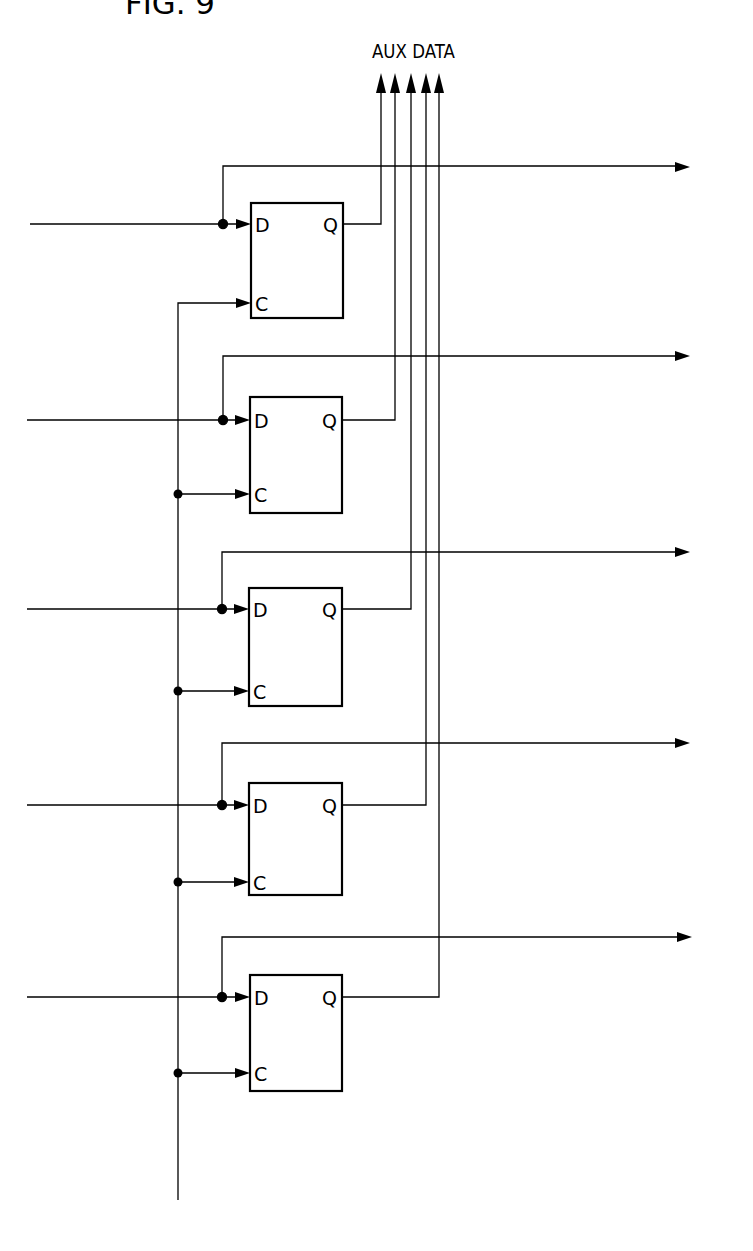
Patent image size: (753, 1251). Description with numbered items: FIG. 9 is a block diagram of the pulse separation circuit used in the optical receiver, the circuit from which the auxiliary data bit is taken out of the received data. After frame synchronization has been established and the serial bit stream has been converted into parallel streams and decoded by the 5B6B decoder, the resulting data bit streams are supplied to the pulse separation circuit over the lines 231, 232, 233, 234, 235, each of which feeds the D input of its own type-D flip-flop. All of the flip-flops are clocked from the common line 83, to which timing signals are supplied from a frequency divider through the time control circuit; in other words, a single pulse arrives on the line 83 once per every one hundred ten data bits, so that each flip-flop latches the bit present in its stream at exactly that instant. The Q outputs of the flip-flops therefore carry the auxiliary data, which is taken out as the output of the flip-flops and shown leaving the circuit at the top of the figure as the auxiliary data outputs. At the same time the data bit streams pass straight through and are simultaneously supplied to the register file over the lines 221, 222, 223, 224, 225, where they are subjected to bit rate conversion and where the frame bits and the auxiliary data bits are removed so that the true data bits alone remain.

The line 83 is at (180, 1142).
The line 221 is at (586, 155).
The line 222 is at (577, 343).
The line 223 is at (573, 549).
The line 224 is at (568, 744).
The line 225 is at (555, 940).
The line 231 is at (52, 224).
The line 232 is at (50, 416).
The line 233 is at (51, 609).
The line 234 is at (50, 803).
The line 235 is at (55, 998).